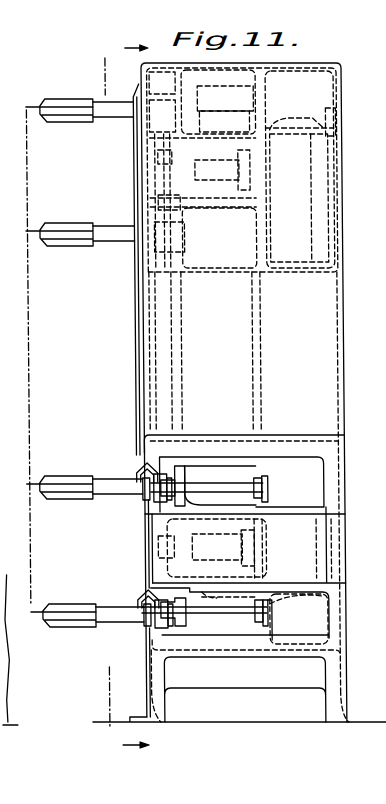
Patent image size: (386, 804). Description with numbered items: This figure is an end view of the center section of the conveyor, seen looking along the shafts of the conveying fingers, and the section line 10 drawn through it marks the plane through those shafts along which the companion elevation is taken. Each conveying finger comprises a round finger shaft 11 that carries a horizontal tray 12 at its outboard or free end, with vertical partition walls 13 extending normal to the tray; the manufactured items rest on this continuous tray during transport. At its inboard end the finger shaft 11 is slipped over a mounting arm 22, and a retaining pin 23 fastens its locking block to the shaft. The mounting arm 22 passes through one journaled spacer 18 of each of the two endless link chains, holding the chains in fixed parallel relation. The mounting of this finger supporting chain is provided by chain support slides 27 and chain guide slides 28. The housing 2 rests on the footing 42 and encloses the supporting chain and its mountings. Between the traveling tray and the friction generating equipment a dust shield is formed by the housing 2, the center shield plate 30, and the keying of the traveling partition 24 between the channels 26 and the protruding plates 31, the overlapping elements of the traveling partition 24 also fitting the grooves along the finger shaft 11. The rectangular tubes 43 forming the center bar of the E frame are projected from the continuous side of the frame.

The housing 2 is at (167, 400).
The section line 10 is at (118, 57).
The finger shaft 11 is at (118, 116).
The horizontal tray 12 is at (64, 113).
The vertical partition walls 13 is at (75, 87).
The journaled spacers 18 is at (268, 473).
The mounting arm 22 is at (232, 490).
The retaining pin 23 is at (196, 600).
The traveling partition 24 is at (141, 488).
The channels 26 is at (138, 467).
The chain support slides 27 is at (267, 507).
The chain guide slides 28 is at (188, 468).
The center shield plate 30 is at (146, 558).
The protruding plates 31 is at (143, 500).
The footing 42 is at (168, 710).
The rectangular tubes 43 is at (305, 594).